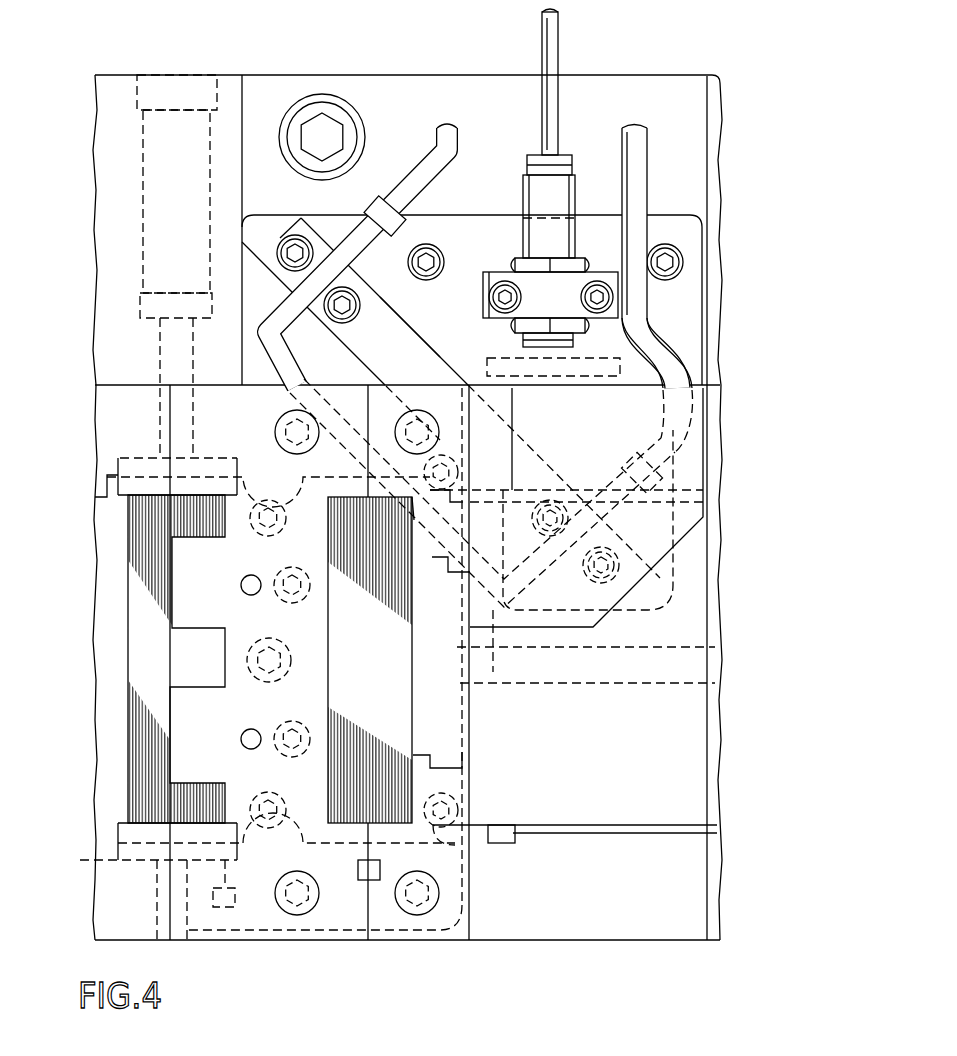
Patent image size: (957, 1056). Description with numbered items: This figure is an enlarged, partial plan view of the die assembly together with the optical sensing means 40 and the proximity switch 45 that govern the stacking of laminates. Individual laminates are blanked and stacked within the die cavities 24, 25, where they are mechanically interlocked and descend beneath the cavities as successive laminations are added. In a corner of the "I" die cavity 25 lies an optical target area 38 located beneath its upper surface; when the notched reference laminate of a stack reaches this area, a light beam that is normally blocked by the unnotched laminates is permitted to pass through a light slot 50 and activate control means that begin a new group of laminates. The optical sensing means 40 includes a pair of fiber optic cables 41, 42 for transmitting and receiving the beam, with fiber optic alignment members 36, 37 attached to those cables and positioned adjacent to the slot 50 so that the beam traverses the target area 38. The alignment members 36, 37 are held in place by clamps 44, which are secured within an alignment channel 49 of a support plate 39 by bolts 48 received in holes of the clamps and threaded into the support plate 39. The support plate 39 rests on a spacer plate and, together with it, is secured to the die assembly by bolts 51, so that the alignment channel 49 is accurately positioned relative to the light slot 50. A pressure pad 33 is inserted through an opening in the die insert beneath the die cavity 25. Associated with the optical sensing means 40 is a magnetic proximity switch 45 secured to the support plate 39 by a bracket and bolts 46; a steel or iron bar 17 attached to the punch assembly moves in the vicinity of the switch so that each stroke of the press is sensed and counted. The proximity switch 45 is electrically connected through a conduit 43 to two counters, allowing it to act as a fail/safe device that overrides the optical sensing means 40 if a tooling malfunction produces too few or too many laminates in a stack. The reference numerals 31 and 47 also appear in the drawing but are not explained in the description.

The steel or iron bar 17 is at (600, 378).
The die cavity 24 is at (150, 778).
The die cavity 25 is at (350, 780).
The locating pin 31 is at (120, 462).
The pressure pad 33 is at (450, 742).
The fiber optic alignment member 36 is at (298, 368).
The fiber optic alignment member 37 is at (493, 672).
The optical target area 38 is at (413, 505).
The support plate 39 is at (697, 232).
The optical sensing means 40 is at (690, 342).
The fiber optic cable 41 is at (432, 157).
The fiber optic cable 42 is at (640, 180).
The conduit 43 is at (553, 45).
The clamp 44 is at (288, 222).
The magnetic proximity switch 45 is at (535, 194).
The bolts 46 is at (492, 280).
The screw 47 is at (598, 292).
The bolts 48 is at (296, 248).
The alignment channel 49 is at (395, 332).
The light slot 50 is at (445, 532).
The bolts 51 is at (430, 260).